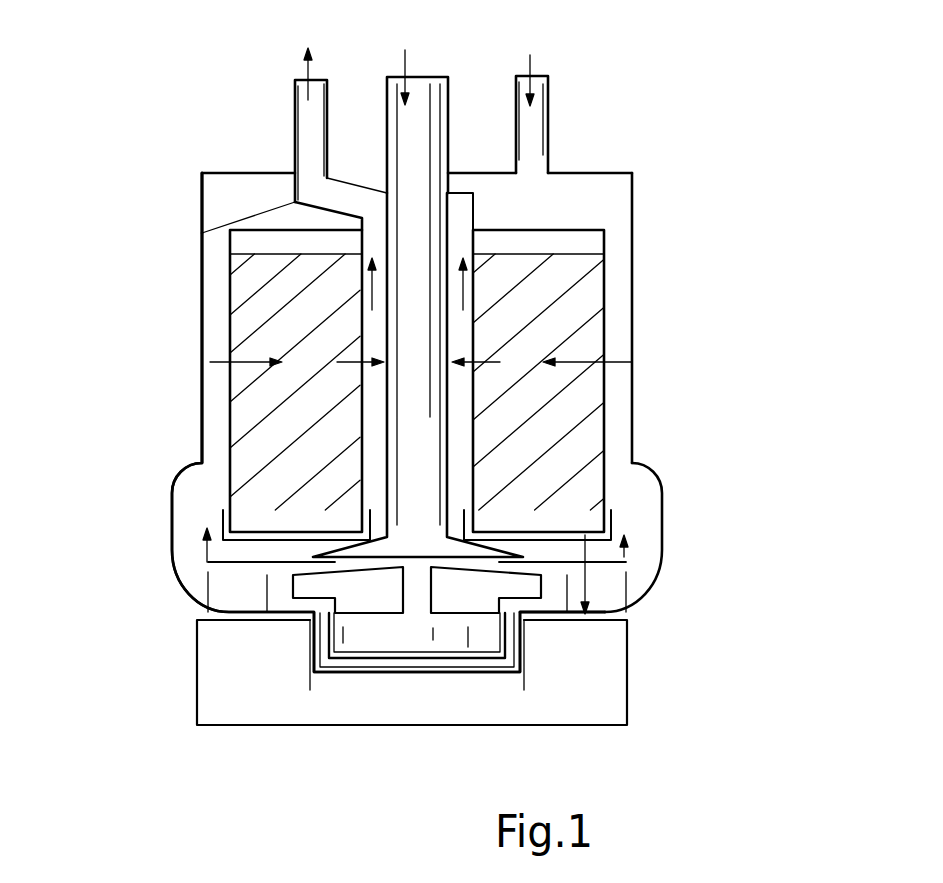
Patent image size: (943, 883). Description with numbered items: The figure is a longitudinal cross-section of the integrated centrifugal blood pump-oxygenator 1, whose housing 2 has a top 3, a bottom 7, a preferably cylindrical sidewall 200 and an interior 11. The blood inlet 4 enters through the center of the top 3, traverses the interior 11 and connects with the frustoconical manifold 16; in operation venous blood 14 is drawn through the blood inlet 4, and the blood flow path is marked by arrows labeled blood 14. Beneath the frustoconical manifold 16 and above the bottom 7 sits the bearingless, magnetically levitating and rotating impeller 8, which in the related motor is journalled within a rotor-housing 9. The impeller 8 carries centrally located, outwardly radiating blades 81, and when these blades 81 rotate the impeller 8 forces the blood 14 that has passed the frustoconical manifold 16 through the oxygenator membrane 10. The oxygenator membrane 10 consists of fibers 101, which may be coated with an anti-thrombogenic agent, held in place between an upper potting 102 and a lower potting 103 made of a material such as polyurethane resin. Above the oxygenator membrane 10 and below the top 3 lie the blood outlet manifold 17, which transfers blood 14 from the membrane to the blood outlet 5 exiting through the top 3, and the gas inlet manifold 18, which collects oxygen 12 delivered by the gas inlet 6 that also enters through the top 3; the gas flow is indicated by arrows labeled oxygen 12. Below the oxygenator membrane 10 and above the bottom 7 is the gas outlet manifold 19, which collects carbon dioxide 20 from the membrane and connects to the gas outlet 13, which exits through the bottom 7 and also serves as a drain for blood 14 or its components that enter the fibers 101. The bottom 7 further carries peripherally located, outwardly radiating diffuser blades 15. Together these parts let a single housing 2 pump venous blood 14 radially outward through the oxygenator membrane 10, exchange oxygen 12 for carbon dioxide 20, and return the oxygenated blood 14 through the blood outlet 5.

The integrated centrifugal blood pump-oxygenator 1 is at (606, 52).
The housing 2 is at (646, 189).
The top 3 is at (235, 173).
The blood inlet 4 is at (447, 93).
The blood outlet 5 is at (293, 92).
The gas inlet 6 is at (548, 110).
The bottom 7 is at (657, 563).
The impeller 8 is at (493, 623).
The rotor-housing 9 is at (317, 672).
The oxygenator membrane 10 is at (491, 381).
The fibers 101 is at (573, 313).
The interior 11 is at (612, 223).
The oxygen 12 is at (530, 60).
The gas outlet 13 is at (583, 612).
The blood 14 is at (308, 62).
The diffuser blades 15 is at (570, 578).
The frustoconical manifold 16 is at (430, 527).
The blood outlet manifold 17 is at (313, 198).
The gas inlet manifold 18 is at (218, 197).
The gas outlet manifold 19 is at (603, 588).
The carbon dioxide 20 is at (633, 598).
The blades 81 is at (368, 573).
The upper potting 102 is at (542, 238).
The lower potting 103 is at (240, 520).
The sidewall 200 is at (200, 358).